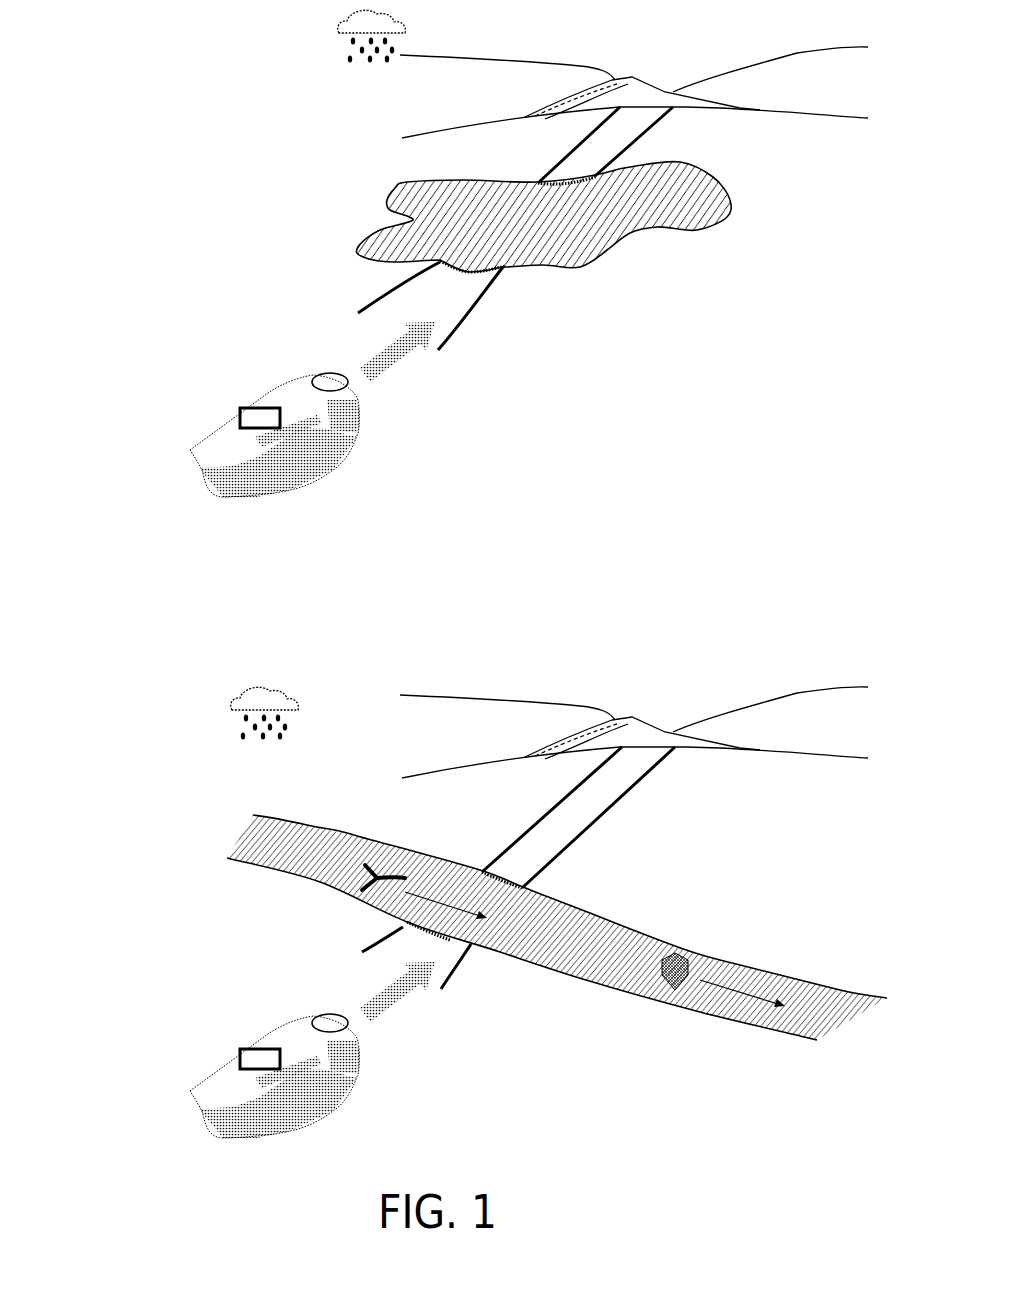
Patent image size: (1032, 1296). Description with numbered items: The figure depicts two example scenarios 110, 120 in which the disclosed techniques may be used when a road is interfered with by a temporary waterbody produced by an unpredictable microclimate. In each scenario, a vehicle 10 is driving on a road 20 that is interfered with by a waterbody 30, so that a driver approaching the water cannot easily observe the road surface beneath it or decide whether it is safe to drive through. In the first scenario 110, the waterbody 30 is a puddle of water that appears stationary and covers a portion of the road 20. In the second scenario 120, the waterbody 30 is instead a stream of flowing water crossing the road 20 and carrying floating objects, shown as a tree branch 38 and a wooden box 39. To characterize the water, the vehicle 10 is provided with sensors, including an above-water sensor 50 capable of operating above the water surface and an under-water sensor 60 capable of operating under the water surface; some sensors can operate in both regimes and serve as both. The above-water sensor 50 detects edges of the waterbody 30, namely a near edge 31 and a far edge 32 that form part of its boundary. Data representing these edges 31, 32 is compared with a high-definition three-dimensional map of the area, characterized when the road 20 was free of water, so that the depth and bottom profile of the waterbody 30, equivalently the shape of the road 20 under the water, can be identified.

The vehicle 10 is at (189, 446).
The road 20 is at (452, 293).
The waterbody 30 is at (563, 225).
The near edge 31 is at (490, 270).
The far edge 32 is at (555, 175).
The tree branch 38 is at (392, 860).
The wooden box 39 is at (677, 952).
The above-water sensor 50 is at (257, 405).
The under-water sensor 60 is at (322, 373).
The scenario 110 is at (135, 35).
The scenario 120 is at (135, 675).